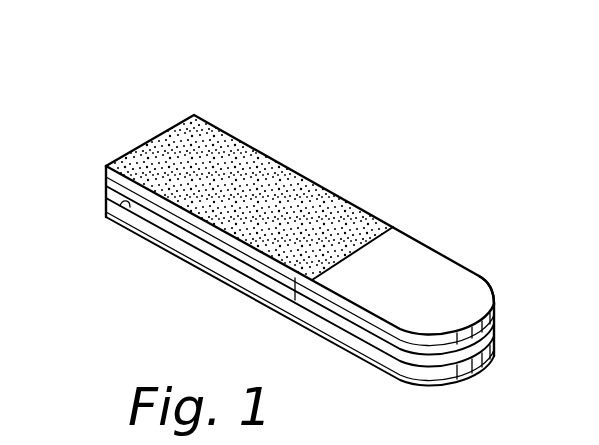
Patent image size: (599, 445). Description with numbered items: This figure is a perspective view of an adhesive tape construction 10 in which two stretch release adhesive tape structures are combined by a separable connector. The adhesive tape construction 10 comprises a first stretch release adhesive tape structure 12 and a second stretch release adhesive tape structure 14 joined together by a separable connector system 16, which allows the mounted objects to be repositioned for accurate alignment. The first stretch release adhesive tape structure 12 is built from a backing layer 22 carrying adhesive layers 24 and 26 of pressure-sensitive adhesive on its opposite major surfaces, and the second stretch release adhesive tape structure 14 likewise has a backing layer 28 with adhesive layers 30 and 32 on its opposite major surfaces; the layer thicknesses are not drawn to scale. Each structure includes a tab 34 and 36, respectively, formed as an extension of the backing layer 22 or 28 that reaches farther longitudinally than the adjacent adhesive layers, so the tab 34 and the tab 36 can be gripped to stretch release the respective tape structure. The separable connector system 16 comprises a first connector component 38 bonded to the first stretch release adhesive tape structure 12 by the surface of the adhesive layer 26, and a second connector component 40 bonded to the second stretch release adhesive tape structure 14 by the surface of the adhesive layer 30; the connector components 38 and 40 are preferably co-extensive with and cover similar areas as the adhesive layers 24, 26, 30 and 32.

The adhesive tape construction 10 is at (323, 80).
The first stretch release adhesive tape structure 12 is at (183, 262).
The second stretch release adhesive tape structure 14 is at (373, 213).
The separable connector system 16 is at (272, 282).
The backing layer 22 is at (489, 366).
The adhesive layer 24 is at (232, 287).
The adhesive layer 26 is at (128, 204).
The backing layer 28 is at (494, 330).
The adhesive layer 30 is at (106, 198).
The adhesive layer 32 is at (262, 168).
The tab 34 is at (441, 361).
The tab 36 is at (472, 297).
The first connector component 38 is at (178, 240).
The second connector component 40 is at (284, 277).